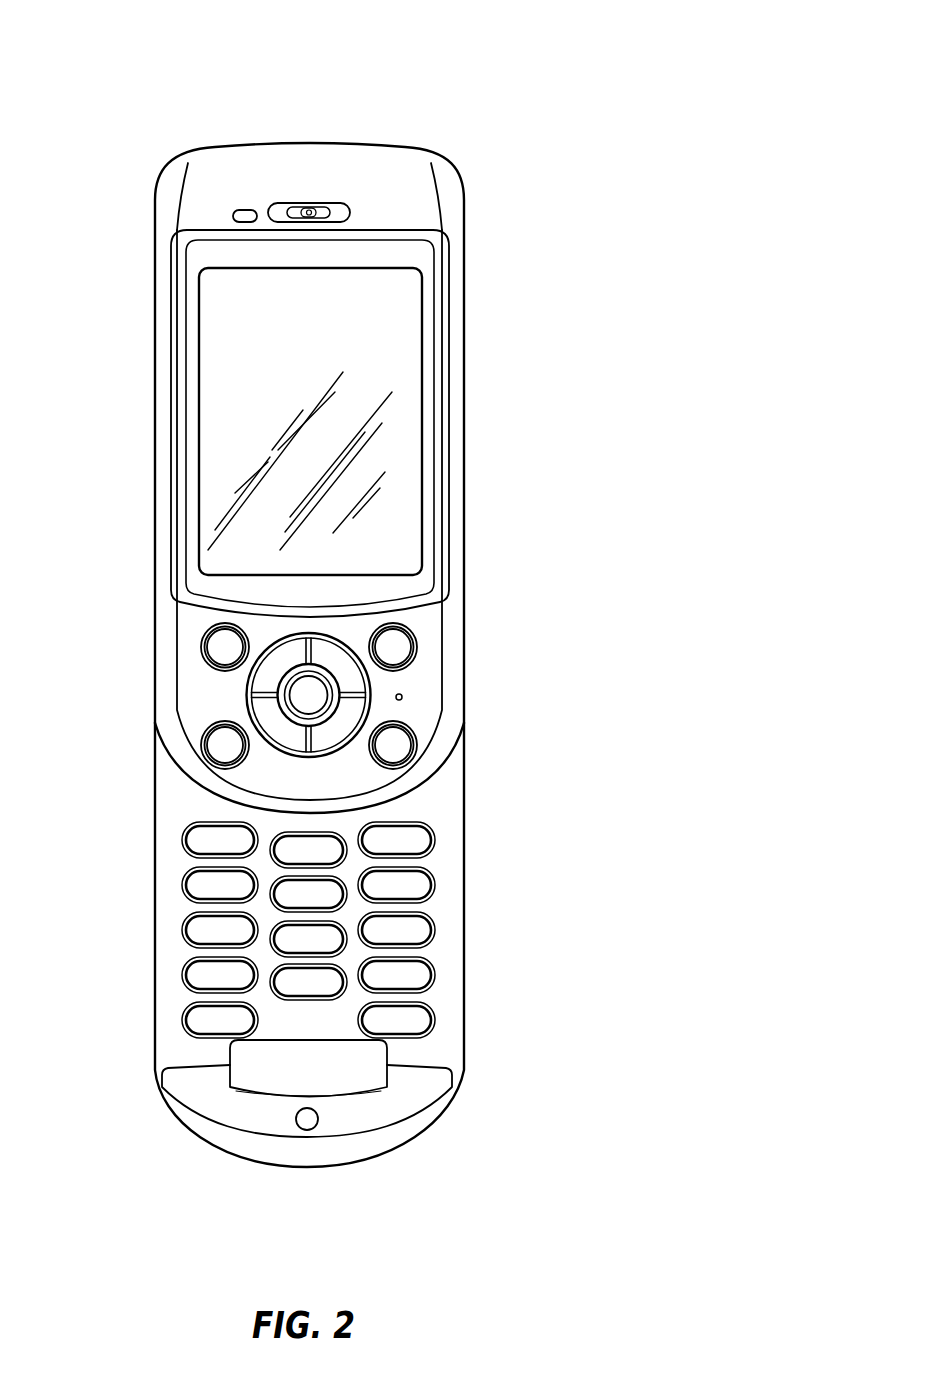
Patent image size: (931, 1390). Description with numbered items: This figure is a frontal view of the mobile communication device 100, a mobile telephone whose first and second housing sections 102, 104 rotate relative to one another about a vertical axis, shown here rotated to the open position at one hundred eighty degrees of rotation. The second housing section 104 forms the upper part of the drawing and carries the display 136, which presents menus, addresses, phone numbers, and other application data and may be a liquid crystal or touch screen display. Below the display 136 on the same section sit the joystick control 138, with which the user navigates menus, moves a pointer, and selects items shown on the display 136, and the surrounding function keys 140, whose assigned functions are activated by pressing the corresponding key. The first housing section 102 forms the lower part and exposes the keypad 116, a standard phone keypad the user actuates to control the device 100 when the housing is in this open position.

The mobile communication device 100 is at (427, 80).
The first housing section 102 is at (345, 1167).
The second housing section 104 is at (465, 321).
The keypad 116 is at (436, 957).
The display 136 is at (233, 390).
The joystick control 138 is at (370, 684).
The function keys 140 is at (198, 653).